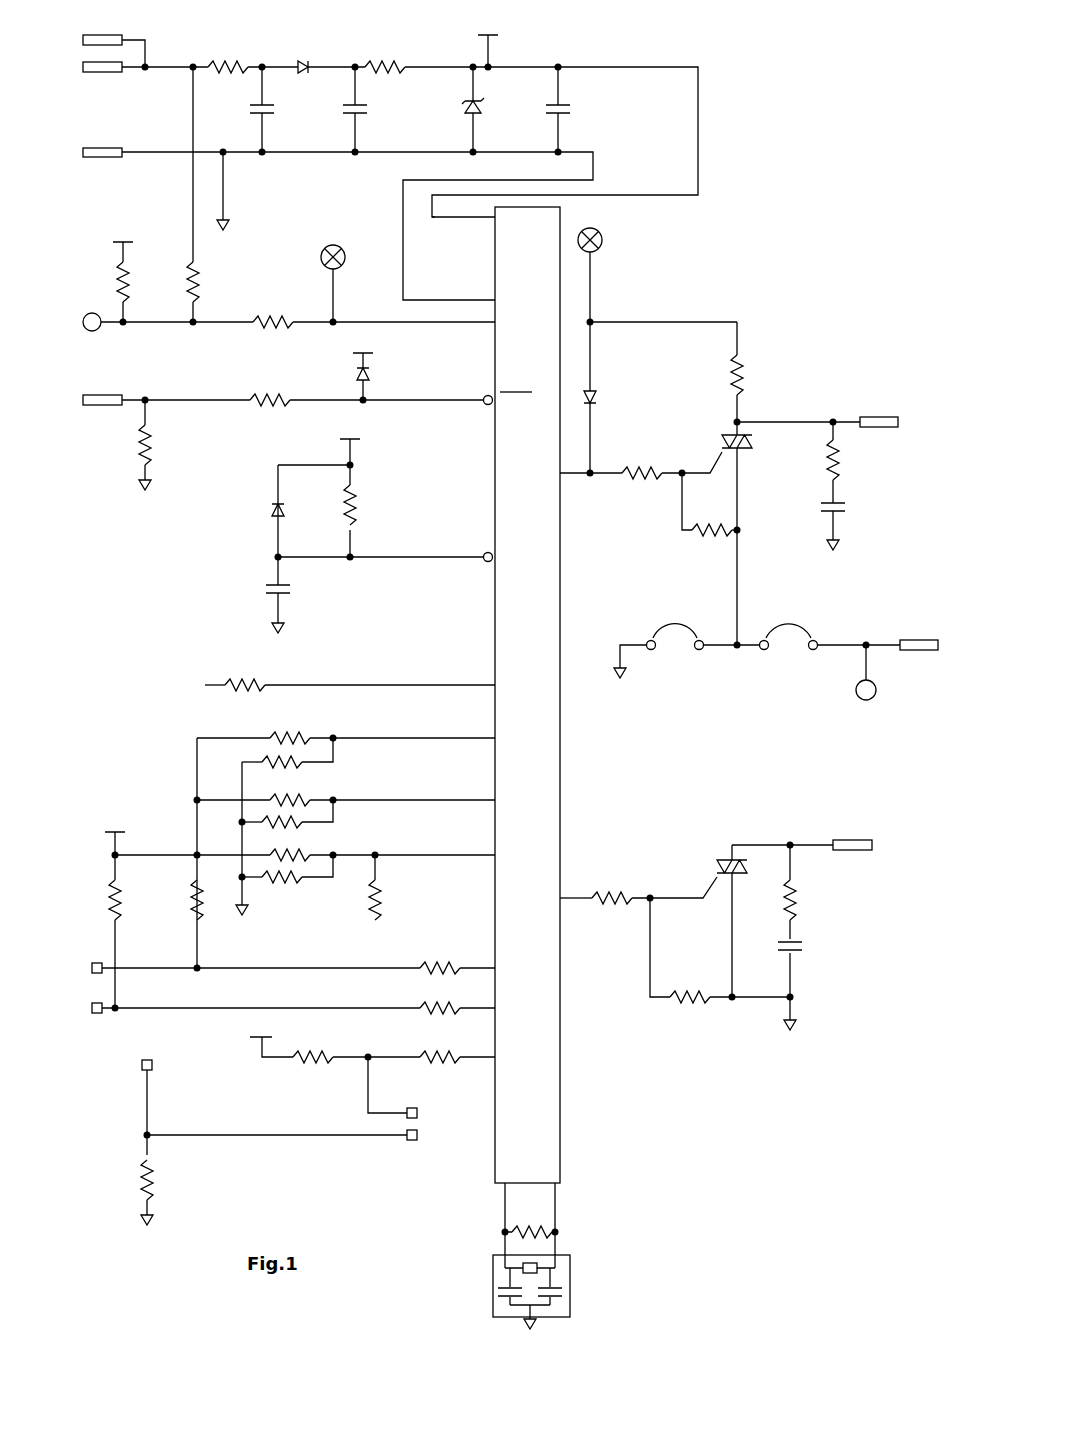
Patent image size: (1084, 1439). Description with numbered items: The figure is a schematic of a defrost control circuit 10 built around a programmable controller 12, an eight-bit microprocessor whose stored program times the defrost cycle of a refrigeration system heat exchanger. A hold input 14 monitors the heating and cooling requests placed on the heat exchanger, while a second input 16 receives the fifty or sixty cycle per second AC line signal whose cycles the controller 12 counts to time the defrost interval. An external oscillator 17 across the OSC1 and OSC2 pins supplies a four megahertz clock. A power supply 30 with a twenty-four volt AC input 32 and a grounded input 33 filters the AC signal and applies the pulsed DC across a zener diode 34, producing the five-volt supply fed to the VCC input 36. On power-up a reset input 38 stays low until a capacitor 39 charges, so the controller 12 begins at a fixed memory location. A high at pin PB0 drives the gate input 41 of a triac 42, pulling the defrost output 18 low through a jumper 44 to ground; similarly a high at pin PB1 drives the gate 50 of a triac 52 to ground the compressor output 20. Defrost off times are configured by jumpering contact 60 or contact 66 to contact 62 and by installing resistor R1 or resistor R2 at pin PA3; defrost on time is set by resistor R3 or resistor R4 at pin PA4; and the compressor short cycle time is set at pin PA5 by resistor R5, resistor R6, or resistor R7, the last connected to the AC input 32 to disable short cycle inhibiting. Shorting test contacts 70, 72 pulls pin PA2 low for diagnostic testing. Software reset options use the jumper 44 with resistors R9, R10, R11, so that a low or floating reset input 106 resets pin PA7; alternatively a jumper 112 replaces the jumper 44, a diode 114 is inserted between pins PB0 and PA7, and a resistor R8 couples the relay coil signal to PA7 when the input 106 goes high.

The defrost control circuit 10 is at (655, 1090).
The programmable controller 12 is at (557, 612).
The hold input 14 is at (100, 405).
The second input 16 is at (225, 683).
The external oscillator 17 is at (572, 1268).
The first output 18 is at (880, 427).
The second output 20 is at (862, 850).
The power supply 30 is at (540, 58).
The AC input 32 is at (100, 72).
The grounded input 33 is at (100, 157).
The zener diode 34 is at (481, 105).
The VCC input 36 is at (465, 224).
The reset input 38 is at (415, 562).
The capacitor 39 is at (268, 590).
The gate input 41 is at (715, 462).
The triac 42 is at (750, 450).
The jumper 44 is at (672, 612).
The gate 50 is at (712, 886).
The triac 52 is at (742, 872).
The contact 60 is at (105, 972).
The contact 62 is at (152, 1066).
The contact 66 is at (103, 1013).
The test contact 70 is at (410, 1108).
The test contact 72 is at (411, 1142).
The reset input 106 is at (112, 326).
The jumper 112 is at (800, 618).
The diode 114 is at (600, 400).
The resistor R1 is at (285, 736).
The resistor R2 is at (298, 777).
The resistor R3 is at (275, 796).
The resistor R4 is at (275, 830).
The resistor R5 is at (305, 860).
The resistor R6 is at (278, 893).
The resistor R7 is at (380, 872).
The resistor R8 is at (745, 362).
The resistor R9 is at (128, 268).
The resistor R10 is at (200, 265).
The resistor R11 is at (272, 328).